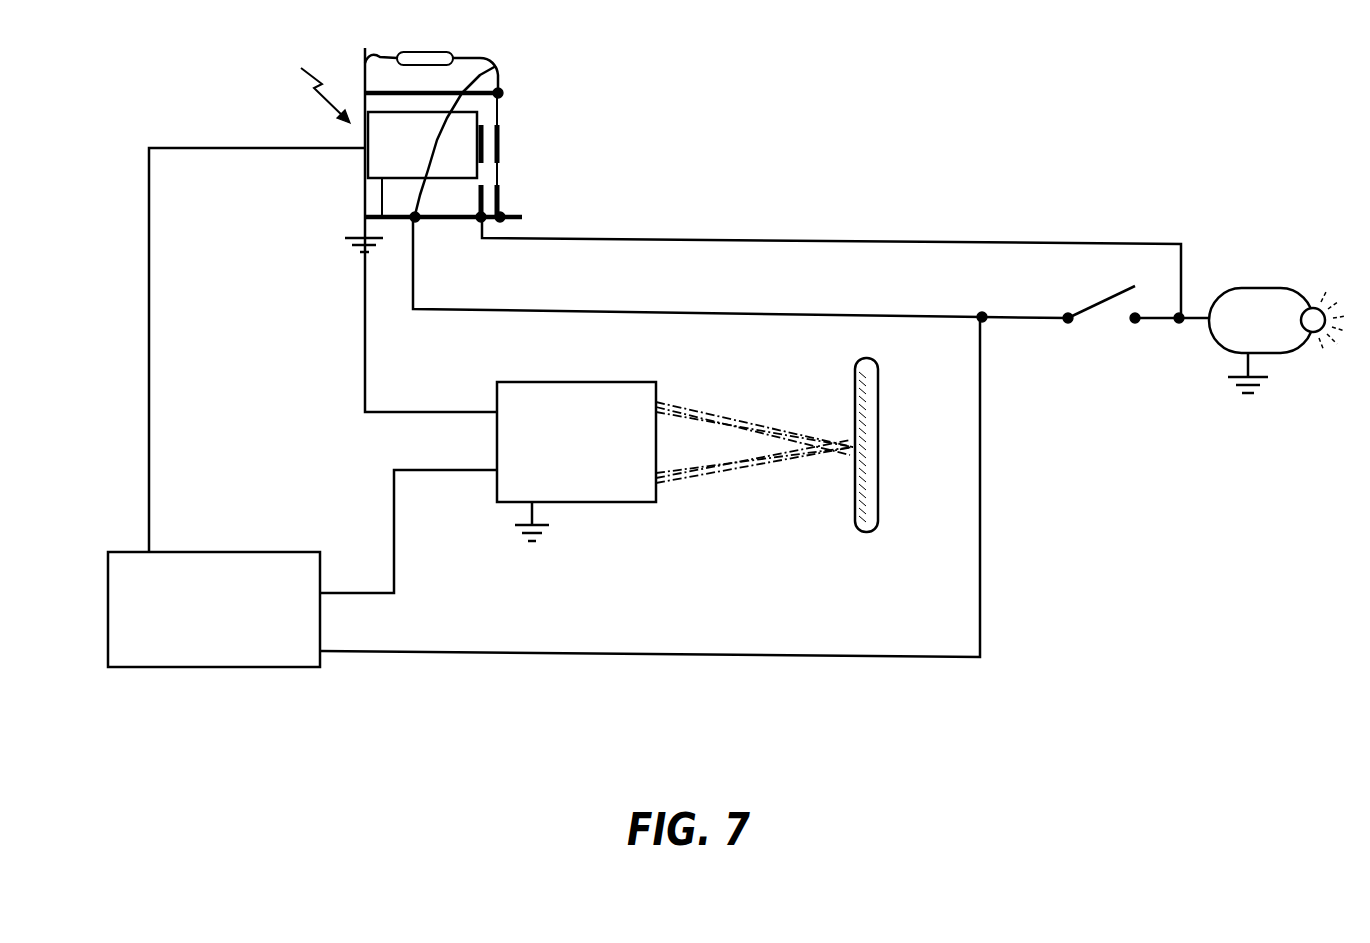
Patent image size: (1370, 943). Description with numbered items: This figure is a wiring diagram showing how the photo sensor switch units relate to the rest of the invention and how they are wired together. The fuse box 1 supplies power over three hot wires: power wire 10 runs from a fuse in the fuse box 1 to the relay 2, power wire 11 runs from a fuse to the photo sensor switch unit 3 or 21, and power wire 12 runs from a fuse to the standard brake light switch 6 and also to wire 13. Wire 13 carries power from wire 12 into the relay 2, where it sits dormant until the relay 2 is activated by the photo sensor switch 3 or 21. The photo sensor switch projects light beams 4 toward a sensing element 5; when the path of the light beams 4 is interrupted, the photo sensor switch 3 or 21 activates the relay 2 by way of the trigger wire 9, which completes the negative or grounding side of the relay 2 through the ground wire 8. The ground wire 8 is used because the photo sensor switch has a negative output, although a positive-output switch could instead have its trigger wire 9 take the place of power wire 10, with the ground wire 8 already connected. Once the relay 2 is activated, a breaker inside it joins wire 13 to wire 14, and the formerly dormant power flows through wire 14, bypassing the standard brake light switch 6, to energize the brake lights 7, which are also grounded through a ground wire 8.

The fuse box 1 is at (210, 642).
The relay 2 is at (432, 160).
The photo sensor switch unit 3 is at (600, 420).
The photo sensor switch unit 21 is at (560, 392).
The light beams 4 is at (700, 475).
The lens / sensing surface 5 is at (864, 368).
The standard brake light switch 6 is at (1113, 293).
The brake lights 7 is at (1266, 338).
The ground wire 8 is at (346, 237).
The trigger wire 9 is at (431, 314).
The power wire 10 is at (149, 322).
The power wire 11 is at (394, 593).
The power wire 12 is at (980, 622).
The wire 13 is at (740, 269).
The wire 14 is at (1115, 243).